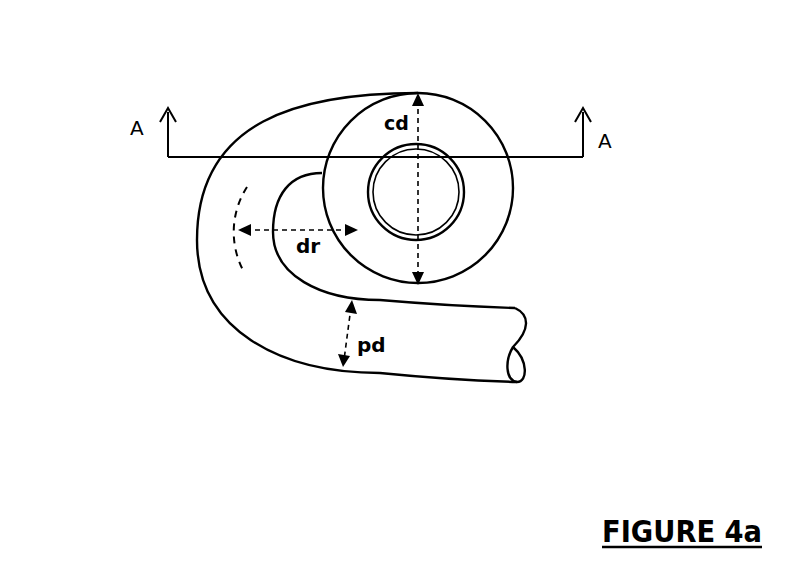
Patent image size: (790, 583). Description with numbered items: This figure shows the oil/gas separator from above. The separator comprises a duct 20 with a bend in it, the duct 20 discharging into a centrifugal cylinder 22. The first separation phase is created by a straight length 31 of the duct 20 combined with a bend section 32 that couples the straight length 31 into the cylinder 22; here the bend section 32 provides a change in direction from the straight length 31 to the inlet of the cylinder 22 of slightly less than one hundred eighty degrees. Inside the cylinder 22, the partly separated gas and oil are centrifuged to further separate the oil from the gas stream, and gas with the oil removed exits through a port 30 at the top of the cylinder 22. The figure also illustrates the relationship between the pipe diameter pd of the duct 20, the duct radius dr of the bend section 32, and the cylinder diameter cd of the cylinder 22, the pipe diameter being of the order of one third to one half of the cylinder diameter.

The duct 20 is at (310, 100).
The centrifugal cylinder 22 is at (483, 263).
The port 30 is at (467, 198).
The straight length 31 is at (513, 422).
The bend section 32 is at (117, 83).